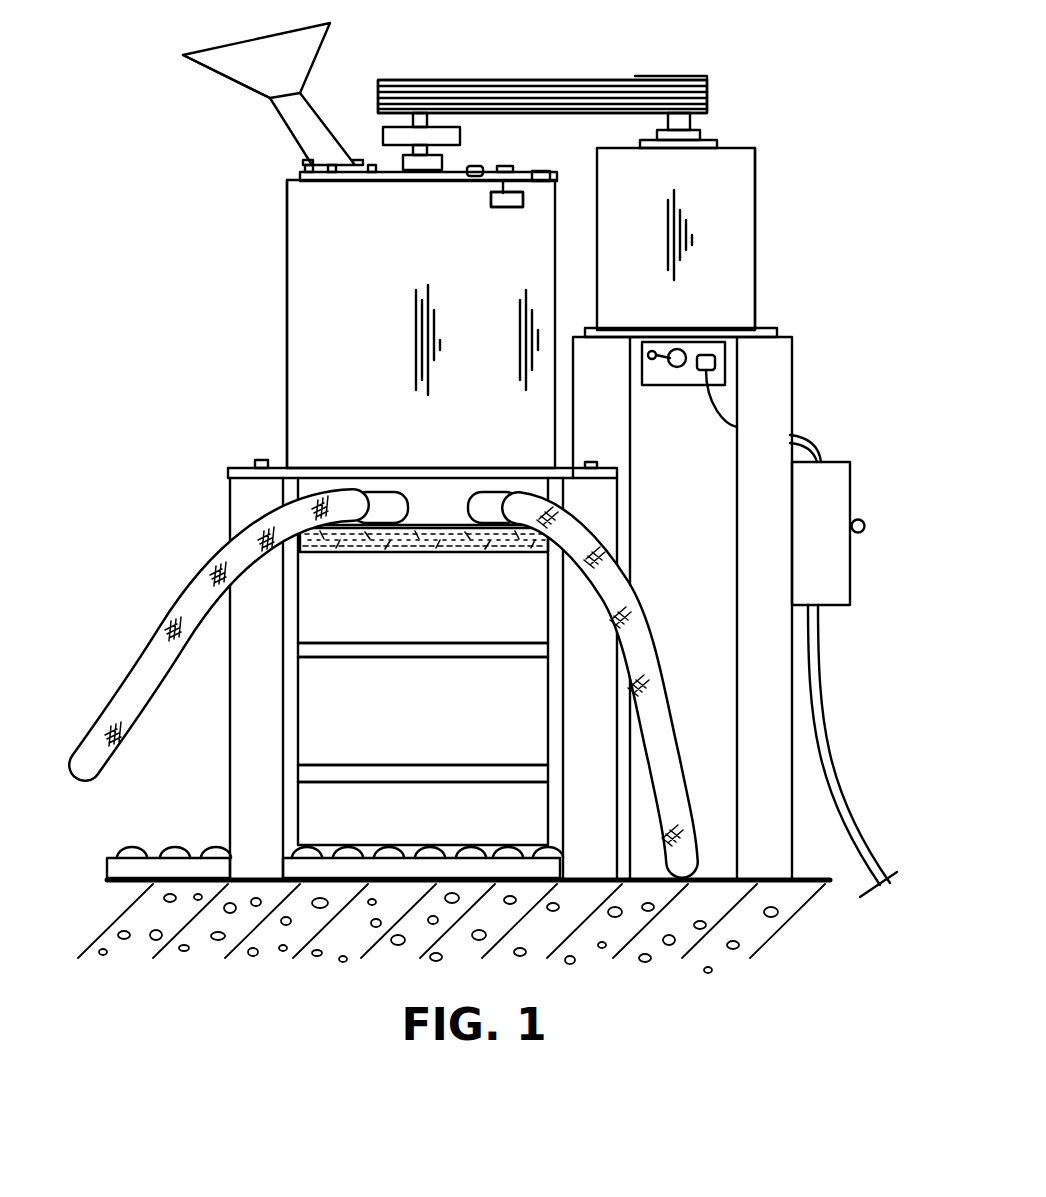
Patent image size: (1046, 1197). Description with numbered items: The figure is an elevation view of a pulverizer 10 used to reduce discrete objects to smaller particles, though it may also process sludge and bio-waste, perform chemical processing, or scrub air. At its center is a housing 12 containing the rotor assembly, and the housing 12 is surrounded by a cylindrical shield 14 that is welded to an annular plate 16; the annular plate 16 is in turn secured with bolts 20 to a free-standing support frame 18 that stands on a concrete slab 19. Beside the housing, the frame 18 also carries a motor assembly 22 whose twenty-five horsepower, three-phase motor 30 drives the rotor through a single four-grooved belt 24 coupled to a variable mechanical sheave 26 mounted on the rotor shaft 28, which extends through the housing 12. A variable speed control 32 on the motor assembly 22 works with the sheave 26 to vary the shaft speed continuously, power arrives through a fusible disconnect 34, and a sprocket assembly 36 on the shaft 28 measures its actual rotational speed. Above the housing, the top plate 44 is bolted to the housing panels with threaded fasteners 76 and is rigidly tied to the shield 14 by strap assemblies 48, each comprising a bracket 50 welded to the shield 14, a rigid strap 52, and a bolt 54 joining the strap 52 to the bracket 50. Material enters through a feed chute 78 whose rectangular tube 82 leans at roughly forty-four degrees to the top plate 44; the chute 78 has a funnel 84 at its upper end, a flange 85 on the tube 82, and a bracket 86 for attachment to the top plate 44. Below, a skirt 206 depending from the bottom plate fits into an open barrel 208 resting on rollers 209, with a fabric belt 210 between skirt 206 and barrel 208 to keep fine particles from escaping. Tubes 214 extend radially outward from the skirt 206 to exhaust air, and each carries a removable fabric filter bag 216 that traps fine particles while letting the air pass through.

The pulverizer 10 is at (287, 295).
The housing 12 is at (318, 170).
The cylindrical shield 14 is at (287, 338).
The annular plate 16 is at (240, 470).
The support frame 18 is at (792, 372).
The concrete slab 19 is at (143, 918).
The bolts 20 is at (262, 458).
The motor assembly 22 is at (763, 187).
The belt 24 is at (571, 78).
The variable mechanical sheave 26 is at (427, 78).
The rotor shaft 28 is at (432, 118).
The motor 30 is at (755, 247).
The variable speed control 32 is at (675, 370).
The fusible disconnect 34 is at (857, 483).
The sprocket assembly 36 is at (381, 135).
The top plate 44 is at (312, 181).
The strap assemblies 48 is at (483, 202).
The bracket 50 is at (512, 210).
The rigid strap 52 is at (476, 182).
The bolt 54 is at (508, 172).
The threaded fasteners 76 is at (547, 172).
The feed chute 78 is at (310, 88).
The rectangular tube 82 is at (282, 124).
The funnel 84 is at (203, 67).
The flange 85 is at (340, 183).
The bracket 86 is at (380, 174).
The skirt 206 is at (438, 488).
The barrel 208 is at (316, 706).
The rollers 209 is at (200, 843).
The fabric belt 210 is at (477, 555).
The tubes 214 is at (380, 500).
The filter bags 216 is at (115, 695).